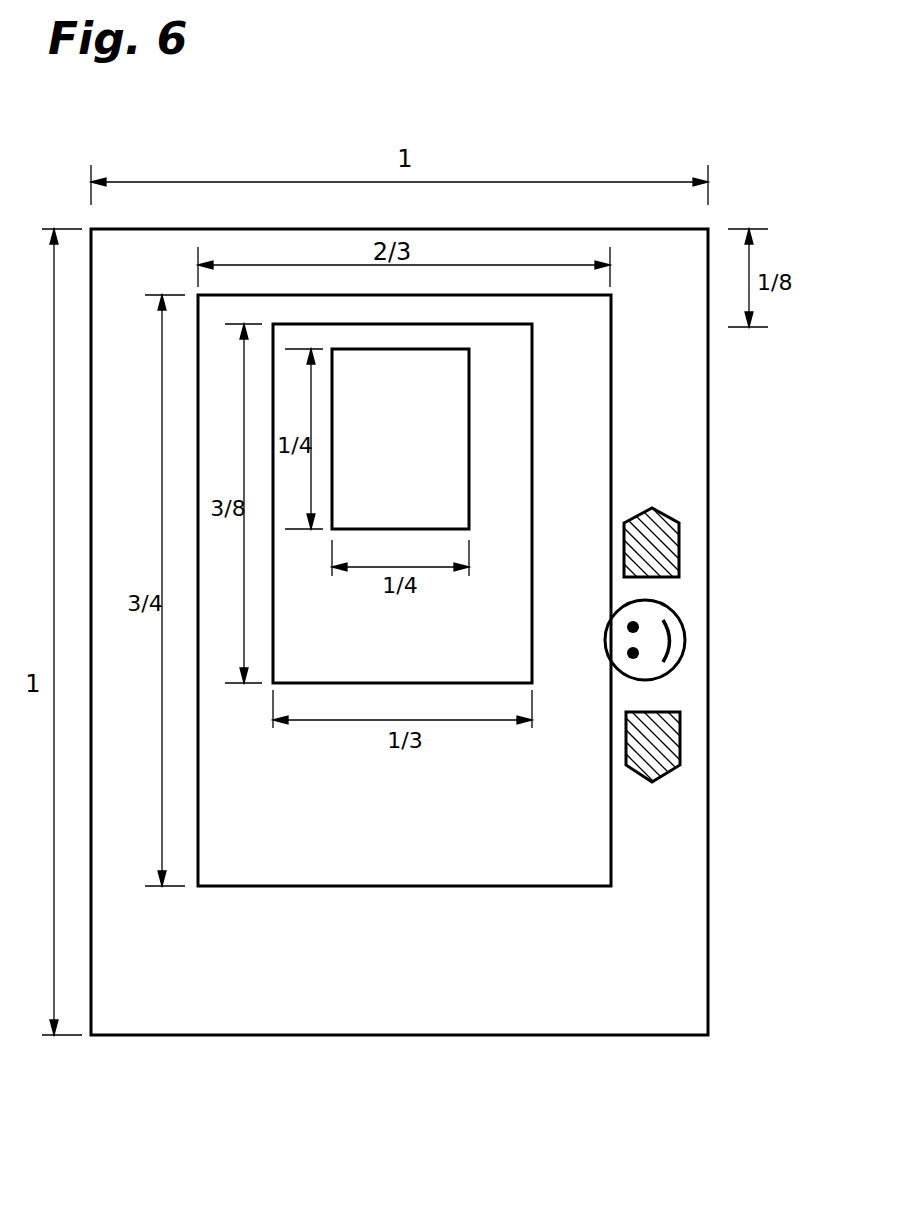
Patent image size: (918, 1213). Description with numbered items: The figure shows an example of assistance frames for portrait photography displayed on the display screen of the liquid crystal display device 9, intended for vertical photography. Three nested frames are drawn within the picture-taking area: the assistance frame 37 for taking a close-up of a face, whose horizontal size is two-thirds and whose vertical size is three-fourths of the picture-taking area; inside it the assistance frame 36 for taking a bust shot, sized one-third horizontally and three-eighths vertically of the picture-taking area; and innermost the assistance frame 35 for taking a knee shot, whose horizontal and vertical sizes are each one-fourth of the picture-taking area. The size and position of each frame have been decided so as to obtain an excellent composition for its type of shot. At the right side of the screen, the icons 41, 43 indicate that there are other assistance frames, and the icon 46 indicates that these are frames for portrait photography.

The liquid crystal display device 9 is at (709, 498).
The assistance frame for taking a knee shot 35 is at (469, 456).
The assistance frame for taking a bust shot 36 is at (532, 530).
The assistance frame for taking a close-up of a face 37 is at (475, 886).
The icon indicating other assistance frames 41 is at (652, 762).
The icon indicating other assistance frames 43 is at (660, 531).
The icon indicating frames for portrait photography 46 is at (620, 662).